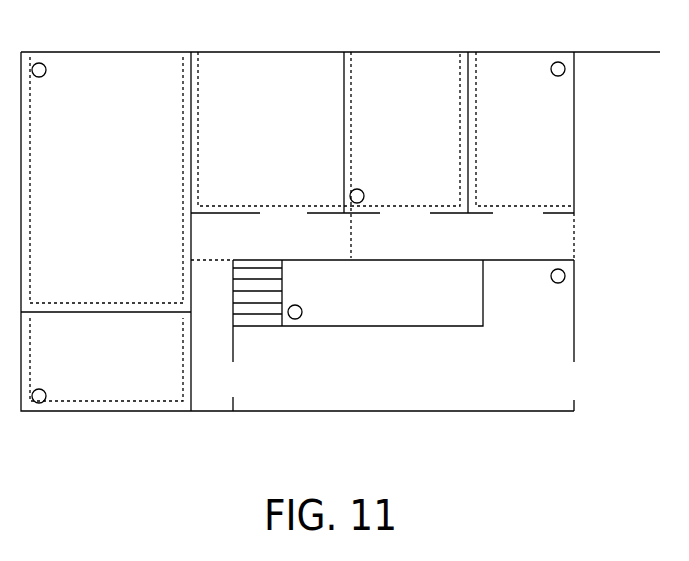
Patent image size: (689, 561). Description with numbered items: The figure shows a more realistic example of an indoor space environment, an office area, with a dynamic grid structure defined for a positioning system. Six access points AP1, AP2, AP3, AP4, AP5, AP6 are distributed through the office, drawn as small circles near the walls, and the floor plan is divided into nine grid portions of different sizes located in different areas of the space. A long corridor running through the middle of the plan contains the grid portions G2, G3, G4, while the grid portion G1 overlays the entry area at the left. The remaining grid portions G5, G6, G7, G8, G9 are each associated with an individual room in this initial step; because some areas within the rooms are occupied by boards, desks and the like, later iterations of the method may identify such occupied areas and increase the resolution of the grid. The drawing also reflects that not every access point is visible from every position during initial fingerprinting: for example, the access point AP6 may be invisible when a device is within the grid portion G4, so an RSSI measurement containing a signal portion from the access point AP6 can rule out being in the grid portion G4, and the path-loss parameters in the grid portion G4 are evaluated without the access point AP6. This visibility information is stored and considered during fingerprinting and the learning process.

The grid portion G1 is at (106, 180).
The grid portion G2 is at (462, 238).
The grid portion G3 is at (271, 236).
The grid portion G4 is at (239, 311).
The grid portion G5 is at (274, 129).
The grid portion G6 is at (405, 155).
The grid portion G7 is at (525, 129).
The grid portion G8 is at (106, 359).
The grid portion G9 is at (382, 322).
The access point AP1 is at (45, 48).
The access point AP2 is at (45, 419).
The access point AP3 is at (591, 278).
The access point AP4 is at (578, 49).
The access point AP5 is at (381, 180).
The access point AP6 is at (308, 336).